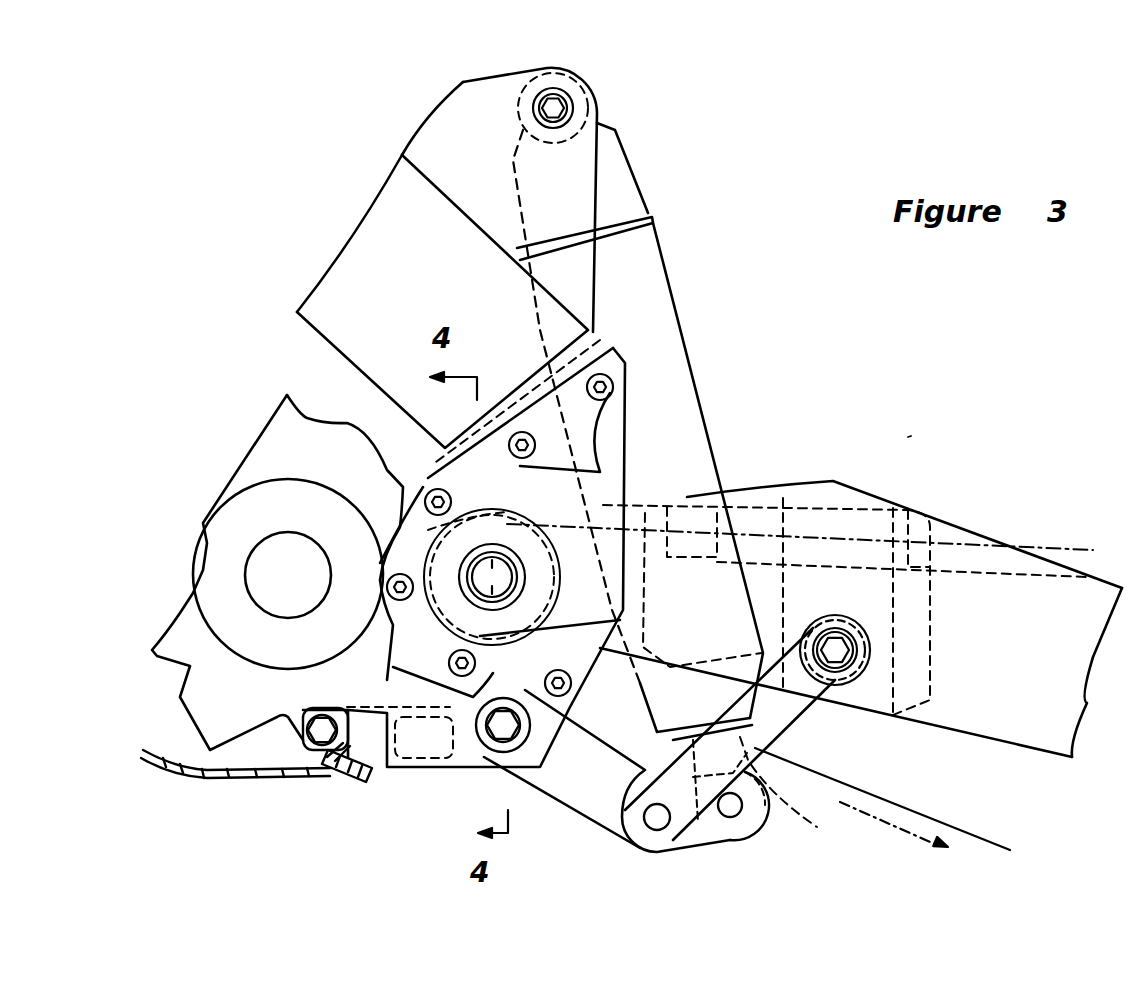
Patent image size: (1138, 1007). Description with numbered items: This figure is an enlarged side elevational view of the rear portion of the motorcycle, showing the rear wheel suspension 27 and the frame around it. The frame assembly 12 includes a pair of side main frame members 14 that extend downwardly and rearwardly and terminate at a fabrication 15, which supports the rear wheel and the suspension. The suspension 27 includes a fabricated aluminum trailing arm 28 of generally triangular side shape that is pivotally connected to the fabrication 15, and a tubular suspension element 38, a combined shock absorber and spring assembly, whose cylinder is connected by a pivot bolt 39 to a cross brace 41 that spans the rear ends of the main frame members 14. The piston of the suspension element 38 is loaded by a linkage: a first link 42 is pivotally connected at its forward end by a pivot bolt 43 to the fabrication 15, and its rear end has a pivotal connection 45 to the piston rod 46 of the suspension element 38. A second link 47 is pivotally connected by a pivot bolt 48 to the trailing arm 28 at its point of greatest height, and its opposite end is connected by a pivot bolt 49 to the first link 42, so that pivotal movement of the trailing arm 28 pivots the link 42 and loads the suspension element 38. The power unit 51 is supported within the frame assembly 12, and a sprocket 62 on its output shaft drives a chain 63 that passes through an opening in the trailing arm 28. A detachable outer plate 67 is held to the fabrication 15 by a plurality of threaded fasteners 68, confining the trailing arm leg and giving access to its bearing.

The frame assembly 12 is at (292, 331).
The main frame members 14 is at (433, 185).
The fabrication 15 is at (625, 452).
The rear wheel suspension 27 is at (920, 431).
The trailing arm 28 is at (958, 508).
The suspension element 38 is at (668, 278).
The pivot bolt 39 is at (563, 93).
The cross brace 41 is at (552, 63).
The first link 42 is at (593, 820).
The pivot bolt 43 is at (497, 732).
The pivotal connection 45 is at (728, 817).
The piston rod 46 is at (787, 800).
The second link 47 is at (788, 726).
The pivot bolt 48 is at (850, 648).
The pivot bolt 49 is at (652, 835).
The power unit 51 is at (172, 676).
The sprocket 62 is at (420, 540).
The chain 63 is at (1065, 547).
The outer plate 67 is at (600, 495).
The threaded fasteners 68 is at (535, 452).